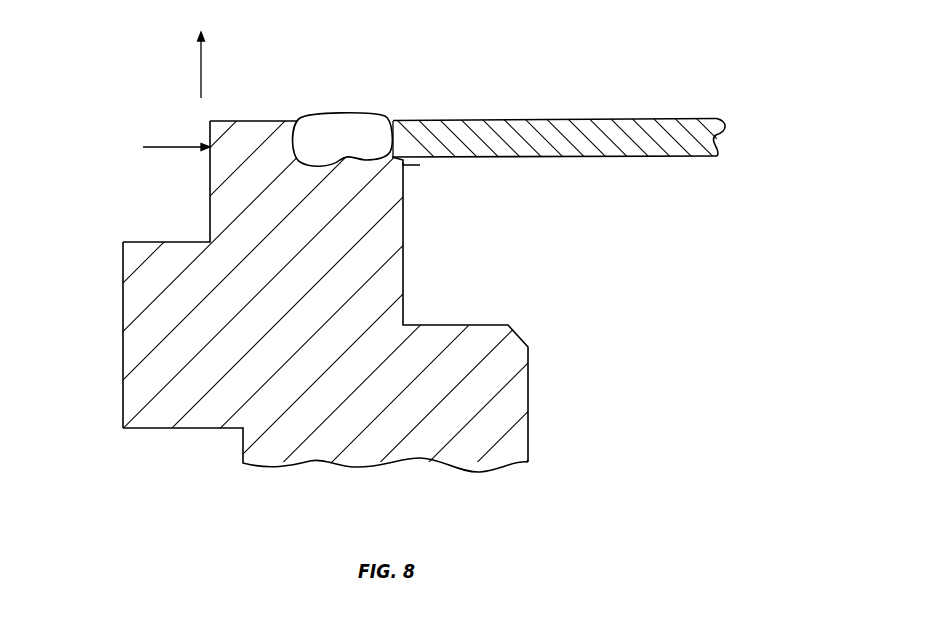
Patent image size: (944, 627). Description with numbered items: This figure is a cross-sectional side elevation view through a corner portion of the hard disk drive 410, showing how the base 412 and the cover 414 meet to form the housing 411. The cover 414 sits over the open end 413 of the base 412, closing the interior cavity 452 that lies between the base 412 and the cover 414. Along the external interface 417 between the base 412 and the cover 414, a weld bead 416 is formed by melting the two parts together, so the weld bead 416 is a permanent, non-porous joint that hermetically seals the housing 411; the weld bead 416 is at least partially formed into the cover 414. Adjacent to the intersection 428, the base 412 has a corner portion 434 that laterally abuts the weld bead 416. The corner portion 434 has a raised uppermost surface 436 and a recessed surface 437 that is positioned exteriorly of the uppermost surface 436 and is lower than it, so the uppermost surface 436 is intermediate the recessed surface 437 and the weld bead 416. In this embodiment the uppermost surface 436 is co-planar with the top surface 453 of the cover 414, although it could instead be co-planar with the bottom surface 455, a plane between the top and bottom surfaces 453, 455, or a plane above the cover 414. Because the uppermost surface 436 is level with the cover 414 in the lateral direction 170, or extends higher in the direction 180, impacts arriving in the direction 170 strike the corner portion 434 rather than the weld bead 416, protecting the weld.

The hard disk drive 410 is at (714, 38).
The housing 411 is at (624, 108).
The base 412 is at (313, 450).
The open end 413 is at (420, 165).
The cover 414 is at (516, 124).
The weld bead 416 is at (371, 133).
The external interface 417 is at (407, 144).
The intersection 428 is at (385, 283).
The corner portion 434 is at (118, 347).
The uppermost surface 436 is at (252, 121).
The recessed surface 437 is at (178, 242).
The interior cavity 452 is at (597, 313).
The top surface 453 is at (672, 118).
The bottom surface 455 is at (620, 157).
The direction 170 is at (182, 147).
The direction 180 is at (201, 72).